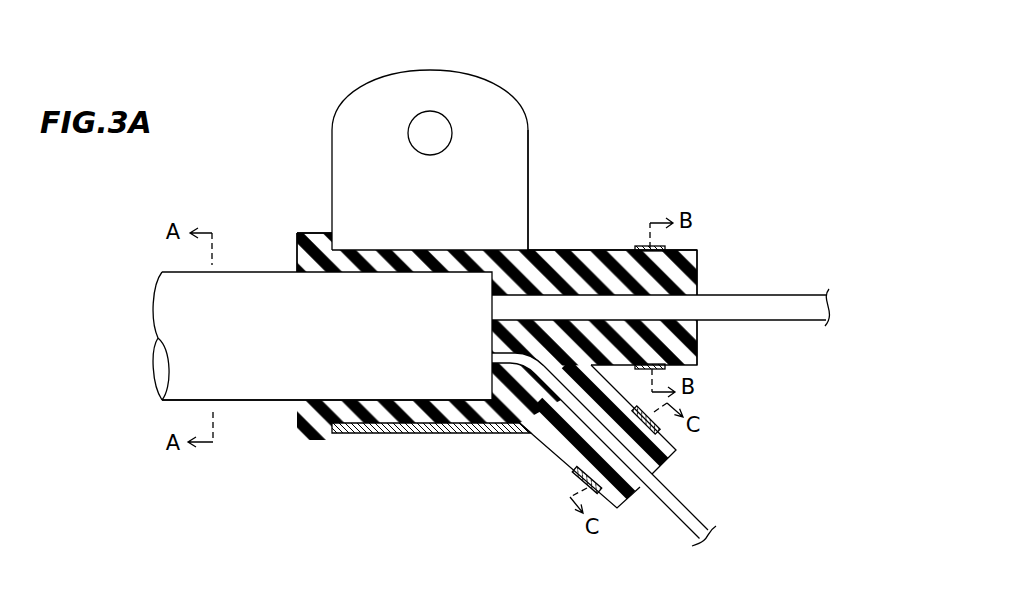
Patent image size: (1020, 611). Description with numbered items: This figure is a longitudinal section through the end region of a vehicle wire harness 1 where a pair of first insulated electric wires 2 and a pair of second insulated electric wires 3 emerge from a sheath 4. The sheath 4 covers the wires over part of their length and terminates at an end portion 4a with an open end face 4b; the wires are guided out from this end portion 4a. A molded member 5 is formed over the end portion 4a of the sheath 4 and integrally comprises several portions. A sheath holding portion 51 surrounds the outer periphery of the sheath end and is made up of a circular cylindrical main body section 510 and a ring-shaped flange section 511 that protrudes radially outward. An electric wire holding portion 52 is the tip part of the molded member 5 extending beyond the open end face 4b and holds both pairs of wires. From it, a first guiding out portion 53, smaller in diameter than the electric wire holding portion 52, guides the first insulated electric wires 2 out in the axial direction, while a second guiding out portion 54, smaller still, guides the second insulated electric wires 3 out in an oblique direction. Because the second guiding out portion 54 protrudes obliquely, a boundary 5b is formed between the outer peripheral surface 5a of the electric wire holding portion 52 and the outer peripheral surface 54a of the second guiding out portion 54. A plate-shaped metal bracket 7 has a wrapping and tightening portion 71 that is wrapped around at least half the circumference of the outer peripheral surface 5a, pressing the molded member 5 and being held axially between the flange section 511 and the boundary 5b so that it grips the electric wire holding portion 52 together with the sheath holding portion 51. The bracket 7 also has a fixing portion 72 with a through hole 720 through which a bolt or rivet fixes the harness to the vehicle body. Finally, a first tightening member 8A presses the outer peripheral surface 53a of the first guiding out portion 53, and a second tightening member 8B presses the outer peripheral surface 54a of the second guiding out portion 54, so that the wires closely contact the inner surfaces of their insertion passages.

The wire harness 1 is at (627, 78).
The first insulated electric wires 2 is at (748, 294).
The second insulated electric wires 3 is at (700, 520).
The sheath 4 is at (255, 402).
The end portion of the sheath 4a is at (375, 380).
The open end face of the sheath 4b is at (493, 385).
The molded member 5 is at (542, 237).
The outer peripheral surface of the molded member 5a is at (412, 250).
The boundary 5b is at (520, 428).
The bracket 7 is at (428, 72).
The first tightening member 8A is at (643, 246).
The second tightening member 8B is at (579, 486).
The sheath holding portion 51 is at (248, 183).
The electric wire holding portion 52 is at (502, 260).
The first guiding out portion 53 is at (598, 250).
The outer peripheral surface of the first guiding out portion 53a is at (693, 252).
The second guiding out portion 54 is at (558, 438).
The outer peripheral surface of the second guiding out portion 54a is at (562, 458).
The wrapping and tightening portion 71 is at (402, 432).
The fixing portion 72 is at (510, 163).
The main body section 510 is at (353, 260).
The flange section 511 is at (307, 233).
The through hole 720 is at (443, 110).